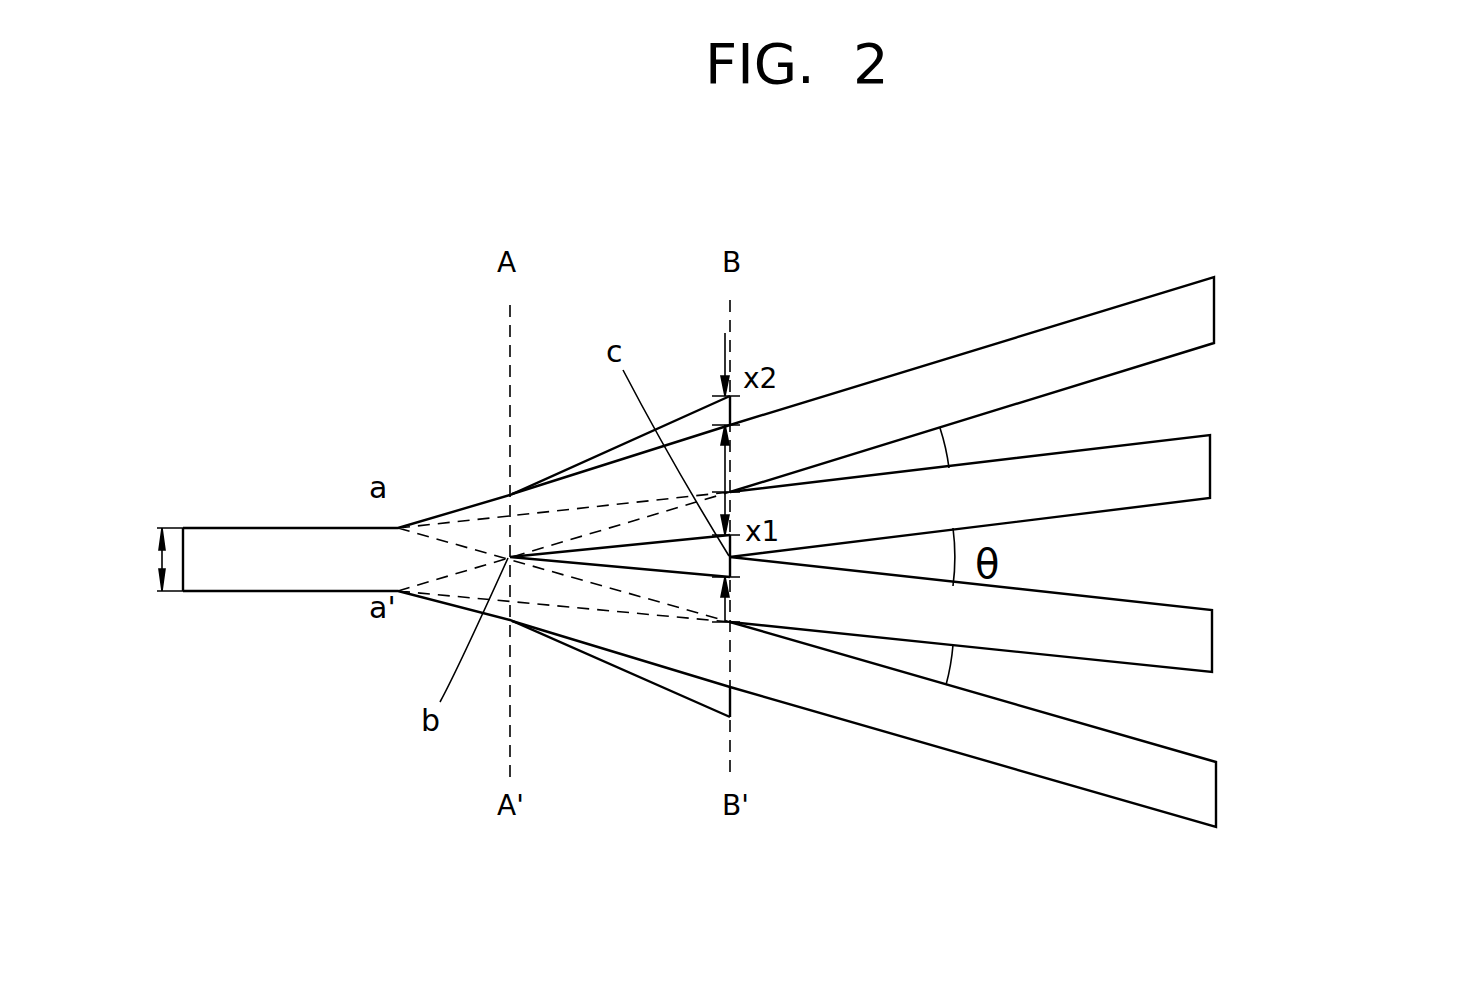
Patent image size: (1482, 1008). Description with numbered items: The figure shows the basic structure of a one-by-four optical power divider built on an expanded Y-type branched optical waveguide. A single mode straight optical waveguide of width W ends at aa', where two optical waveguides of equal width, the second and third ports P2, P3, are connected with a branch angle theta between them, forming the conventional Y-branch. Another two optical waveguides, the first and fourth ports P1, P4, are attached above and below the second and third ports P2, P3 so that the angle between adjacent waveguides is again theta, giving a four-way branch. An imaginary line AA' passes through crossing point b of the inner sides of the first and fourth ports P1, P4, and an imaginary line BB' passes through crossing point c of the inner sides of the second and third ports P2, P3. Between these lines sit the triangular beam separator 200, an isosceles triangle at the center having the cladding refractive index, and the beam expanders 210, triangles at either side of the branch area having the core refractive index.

The beam separator 200 is at (640, 548).
The beam expander 210 is at (706, 398).
The first port P1 is at (1324, 332).
The second port P2 is at (1324, 485).
The third port P3 is at (1324, 663).
The fourth port P4 is at (1324, 822).
The width W is at (154, 559).